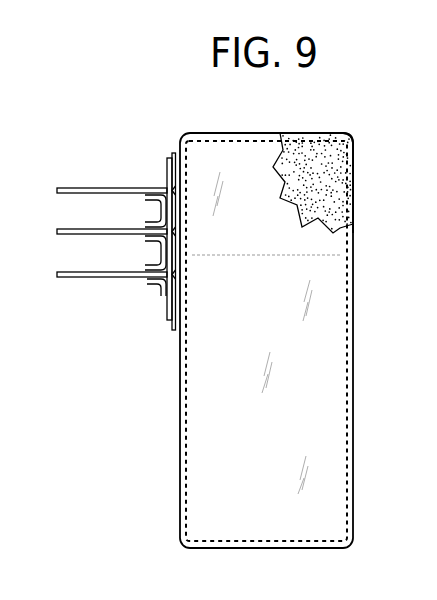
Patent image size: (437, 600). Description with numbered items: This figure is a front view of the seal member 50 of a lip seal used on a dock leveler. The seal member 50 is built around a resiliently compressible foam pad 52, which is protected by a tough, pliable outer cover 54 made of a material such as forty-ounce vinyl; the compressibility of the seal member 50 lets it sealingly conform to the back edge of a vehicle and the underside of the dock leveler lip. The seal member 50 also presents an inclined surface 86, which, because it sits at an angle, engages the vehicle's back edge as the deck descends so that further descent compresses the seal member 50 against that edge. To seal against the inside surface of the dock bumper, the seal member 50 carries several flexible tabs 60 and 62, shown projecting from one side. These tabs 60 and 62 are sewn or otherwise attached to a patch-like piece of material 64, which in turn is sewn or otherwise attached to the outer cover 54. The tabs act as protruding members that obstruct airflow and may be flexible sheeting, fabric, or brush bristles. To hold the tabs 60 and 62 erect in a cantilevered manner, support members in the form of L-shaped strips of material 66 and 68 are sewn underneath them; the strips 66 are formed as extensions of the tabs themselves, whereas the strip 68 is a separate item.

The seal member 50 is at (128, 497).
The foam pad 52 is at (330, 198).
The outer cover 54 is at (355, 177).
The flexible tab 60 is at (77, 187).
The flexible tab 62 is at (92, 271).
The patch-like piece of material 64 is at (173, 325).
The L-shaped strip of material 66 is at (150, 197).
The L-shaped strip of material 68 is at (147, 283).
The inclined surface 86 is at (320, 410).